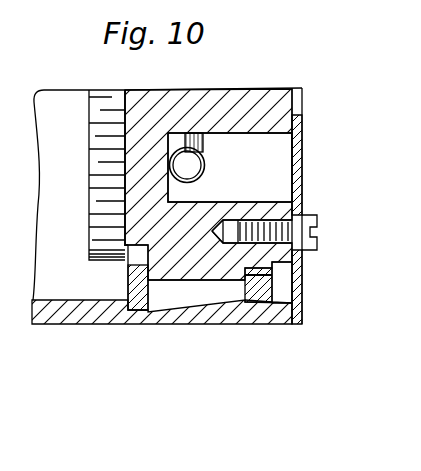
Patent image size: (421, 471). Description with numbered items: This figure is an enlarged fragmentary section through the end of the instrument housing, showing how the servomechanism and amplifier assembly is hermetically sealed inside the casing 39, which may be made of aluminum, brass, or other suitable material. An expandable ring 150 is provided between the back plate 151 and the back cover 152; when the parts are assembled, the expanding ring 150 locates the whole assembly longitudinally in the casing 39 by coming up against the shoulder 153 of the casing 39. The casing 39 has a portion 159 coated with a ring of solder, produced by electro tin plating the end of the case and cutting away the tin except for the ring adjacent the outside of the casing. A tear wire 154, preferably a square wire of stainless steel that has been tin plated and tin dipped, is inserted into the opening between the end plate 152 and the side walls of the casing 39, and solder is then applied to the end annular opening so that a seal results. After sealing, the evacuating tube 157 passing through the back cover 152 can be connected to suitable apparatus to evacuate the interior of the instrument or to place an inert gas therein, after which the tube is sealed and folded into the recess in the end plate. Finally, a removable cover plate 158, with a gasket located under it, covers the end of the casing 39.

The casing 39 is at (48, 322).
The expandable ring 150 is at (146, 297).
The back plate 151 is at (110, 260).
The back cover 152 is at (275, 122).
The shoulder 153 is at (108, 322).
The tear wire 154 is at (270, 285).
The evacuating tube 157 is at (203, 152).
The removable cover plate 158 is at (298, 185).
The portion coated with solder 159 is at (260, 303).